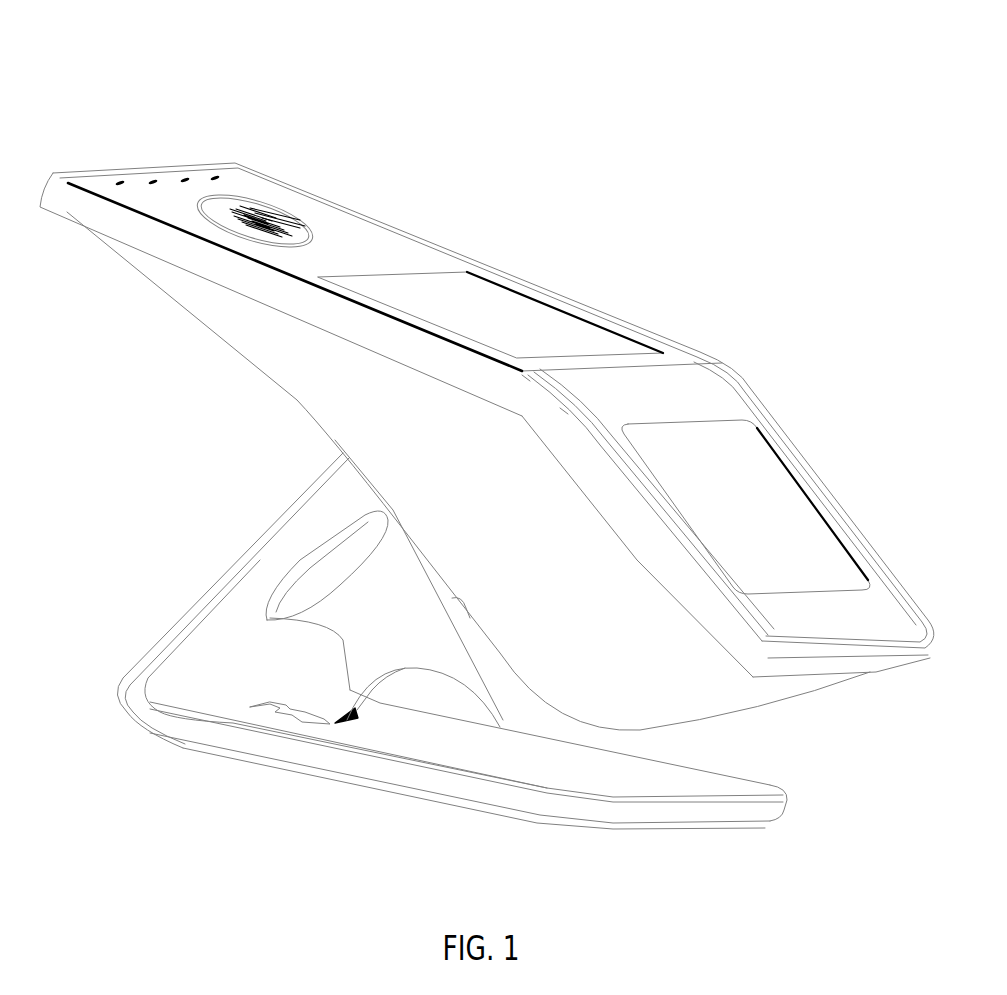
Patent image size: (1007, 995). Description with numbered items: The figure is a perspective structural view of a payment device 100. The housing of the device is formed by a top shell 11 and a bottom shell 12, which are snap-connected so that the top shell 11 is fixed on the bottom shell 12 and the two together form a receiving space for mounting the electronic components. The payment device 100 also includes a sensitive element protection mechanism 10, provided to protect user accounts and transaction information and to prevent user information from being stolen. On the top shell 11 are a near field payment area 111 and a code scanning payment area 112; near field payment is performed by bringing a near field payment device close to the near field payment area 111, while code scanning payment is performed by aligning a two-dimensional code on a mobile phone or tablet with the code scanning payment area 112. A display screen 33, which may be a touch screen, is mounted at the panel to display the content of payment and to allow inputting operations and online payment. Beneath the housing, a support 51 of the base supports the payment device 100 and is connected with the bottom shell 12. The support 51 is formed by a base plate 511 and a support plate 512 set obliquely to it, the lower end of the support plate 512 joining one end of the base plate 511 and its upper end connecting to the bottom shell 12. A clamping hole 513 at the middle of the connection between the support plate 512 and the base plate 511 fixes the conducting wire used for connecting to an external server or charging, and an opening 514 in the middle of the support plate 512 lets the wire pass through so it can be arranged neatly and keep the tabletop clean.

The payment device 100 is at (466, 43).
The sensitive element protection mechanism 10 is at (845, 710).
The top shell 11 is at (130, 230).
The near field payment area 111 is at (343, 235).
The code scanning payment area 112 is at (776, 505).
The bottom shell 12 is at (227, 308).
The display screen 33 is at (543, 318).
The support 51 is at (200, 843).
The base plate 511 is at (437, 785).
The support plate 512 is at (213, 588).
The clamping hole 513 is at (500, 727).
The opening 514 is at (345, 593).